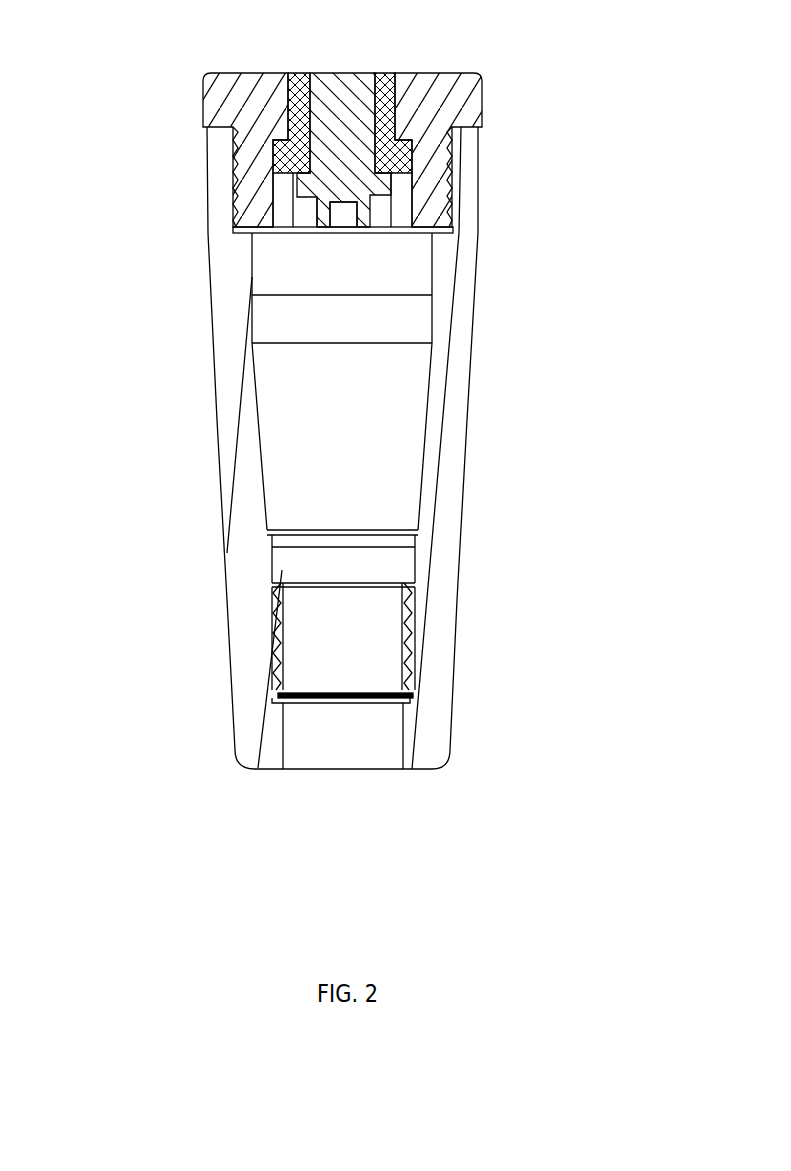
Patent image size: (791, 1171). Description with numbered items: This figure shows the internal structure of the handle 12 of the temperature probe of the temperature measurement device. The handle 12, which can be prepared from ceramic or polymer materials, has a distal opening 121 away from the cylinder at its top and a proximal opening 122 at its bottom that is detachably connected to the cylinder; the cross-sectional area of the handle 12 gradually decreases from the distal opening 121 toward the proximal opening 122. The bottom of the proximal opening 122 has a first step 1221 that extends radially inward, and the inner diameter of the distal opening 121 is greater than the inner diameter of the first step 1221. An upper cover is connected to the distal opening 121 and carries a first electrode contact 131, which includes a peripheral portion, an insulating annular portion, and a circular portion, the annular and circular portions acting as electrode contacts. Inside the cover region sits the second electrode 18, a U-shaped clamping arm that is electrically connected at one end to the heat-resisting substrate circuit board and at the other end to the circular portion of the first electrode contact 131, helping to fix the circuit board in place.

The handle 12 is at (450, 497).
The distal opening 121 is at (400, 195).
The proximal opening 122 is at (295, 747).
The first step 1221 is at (420, 687).
The first electrode contact 131 is at (357, 70).
The second electrode 18 is at (317, 208).